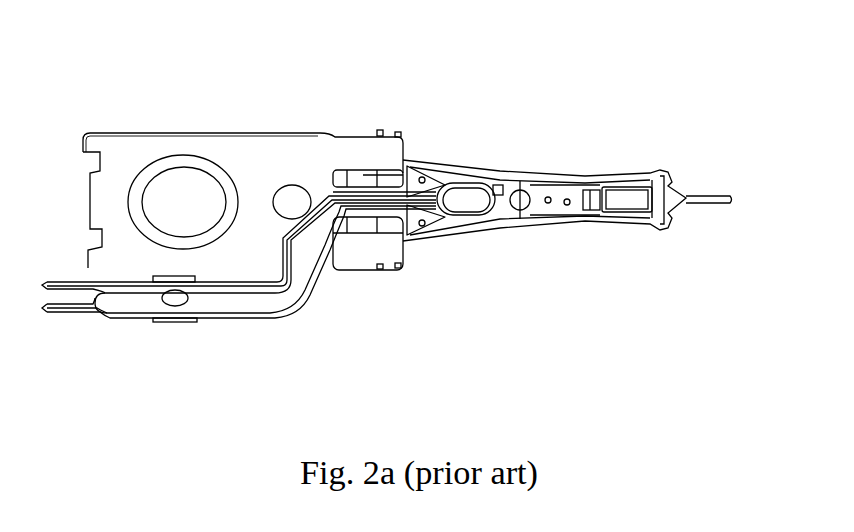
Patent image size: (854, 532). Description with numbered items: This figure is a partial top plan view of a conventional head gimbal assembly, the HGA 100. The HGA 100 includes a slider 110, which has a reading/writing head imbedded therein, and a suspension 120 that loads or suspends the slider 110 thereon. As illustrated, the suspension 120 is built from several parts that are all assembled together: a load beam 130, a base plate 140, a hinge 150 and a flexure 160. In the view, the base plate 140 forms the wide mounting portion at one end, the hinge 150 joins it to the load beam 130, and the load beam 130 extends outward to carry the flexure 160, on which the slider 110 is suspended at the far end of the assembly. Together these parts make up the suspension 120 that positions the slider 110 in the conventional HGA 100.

The HGA 100 is at (81, 30).
The slider 110 is at (627, 200).
The suspension 120 is at (480, 158).
The load beam 130 is at (456, 222).
The base plate 140 is at (83, 140).
The hinge 150 is at (360, 243).
The flexure 160 is at (547, 207).